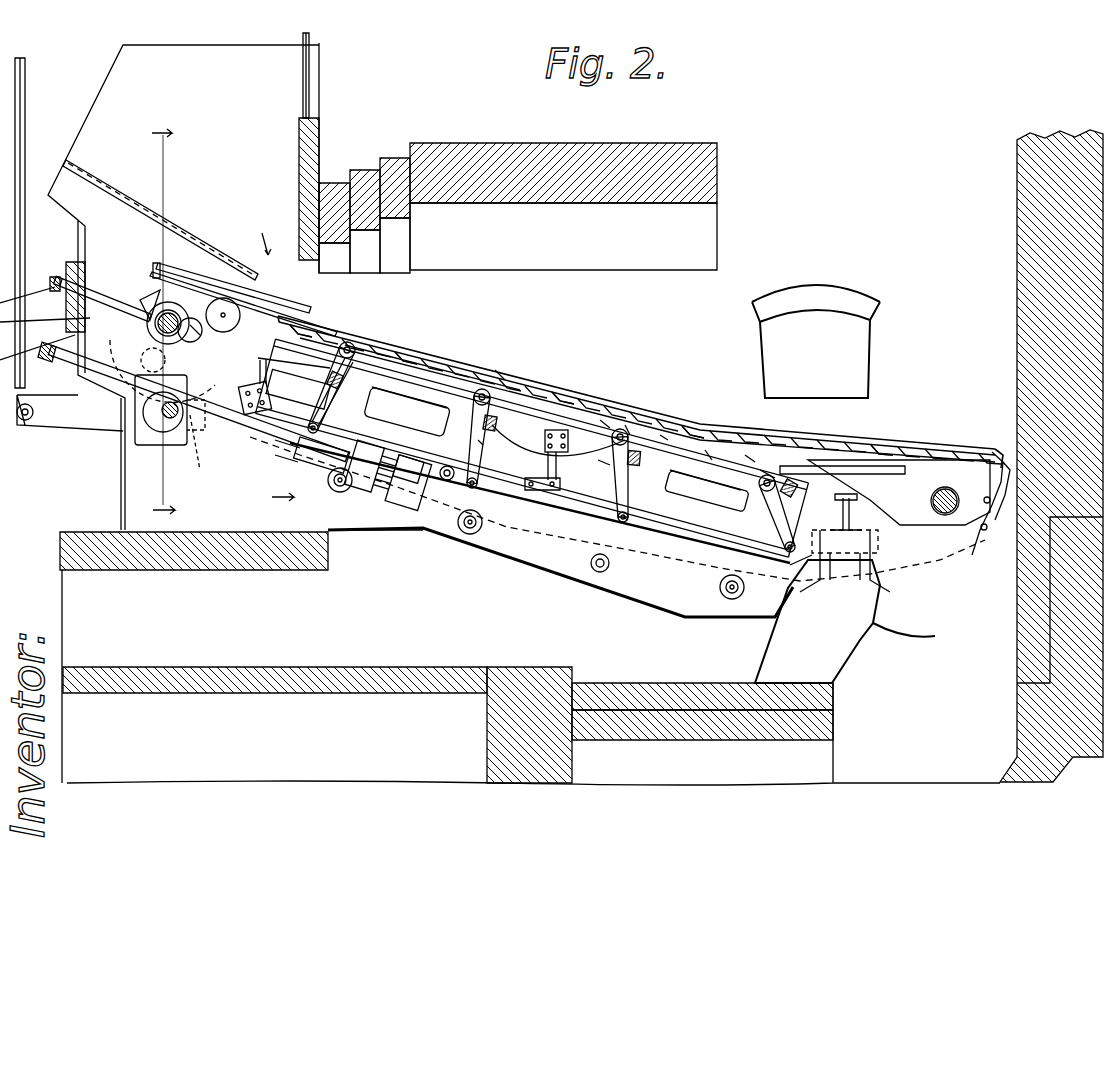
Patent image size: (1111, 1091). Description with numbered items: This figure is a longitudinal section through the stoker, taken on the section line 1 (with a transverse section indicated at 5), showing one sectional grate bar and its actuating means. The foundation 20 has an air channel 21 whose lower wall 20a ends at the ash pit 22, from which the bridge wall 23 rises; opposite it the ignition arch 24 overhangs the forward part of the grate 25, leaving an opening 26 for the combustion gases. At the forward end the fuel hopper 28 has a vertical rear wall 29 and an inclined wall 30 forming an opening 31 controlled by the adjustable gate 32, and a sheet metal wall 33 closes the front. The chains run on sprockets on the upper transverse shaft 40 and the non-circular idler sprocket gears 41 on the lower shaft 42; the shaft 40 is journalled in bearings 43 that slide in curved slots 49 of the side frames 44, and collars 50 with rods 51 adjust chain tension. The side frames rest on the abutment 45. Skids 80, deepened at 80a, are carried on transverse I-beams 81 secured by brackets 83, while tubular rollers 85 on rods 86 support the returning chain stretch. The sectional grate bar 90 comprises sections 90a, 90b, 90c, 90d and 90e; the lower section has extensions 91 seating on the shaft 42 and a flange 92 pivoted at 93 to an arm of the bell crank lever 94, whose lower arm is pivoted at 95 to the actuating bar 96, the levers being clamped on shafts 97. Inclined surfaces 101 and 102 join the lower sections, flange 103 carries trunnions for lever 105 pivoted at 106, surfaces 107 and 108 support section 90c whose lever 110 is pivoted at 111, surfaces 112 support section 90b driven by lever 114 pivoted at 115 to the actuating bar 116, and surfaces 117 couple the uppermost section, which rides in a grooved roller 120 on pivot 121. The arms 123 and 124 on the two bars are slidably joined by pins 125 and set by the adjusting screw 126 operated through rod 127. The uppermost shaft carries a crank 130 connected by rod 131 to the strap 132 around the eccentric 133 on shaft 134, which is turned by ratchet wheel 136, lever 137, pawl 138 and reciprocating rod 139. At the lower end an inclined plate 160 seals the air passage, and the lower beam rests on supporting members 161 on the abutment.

The section line 1- 1 is at (160, 321).
The section line 5- 5 is at (393, 268).
The foundation 20 is at (78, 532).
The lower wall of the channel 20a is at (672, 683).
The channel 21 is at (275, 648).
The ash pit 22 is at (533, 734).
The bridge wall 23 is at (1016, 320).
The ignition arch 24 is at (718, 170).
The grate 25 is at (567, 407).
The opening 26 is at (881, 211).
The fuel hopper 28 is at (267, 93).
The vertical rear wall 29 is at (328, 101).
The inclined wall 30 is at (113, 187).
The opening 31 is at (255, 230).
The gate 32 is at (298, 148).
The sheet metal wall 33 is at (79, 231).
The transverse shaft 40 is at (160, 288).
The idler sprocket gears 41 is at (978, 550).
The transverse shaft 42 is at (945, 515).
The bearings 43 is at (169, 318).
The side frames 44 is at (560, 572).
The abutment 45 is at (872, 660).
The curved slots 49 is at (197, 340).
The collars 50 is at (135, 342).
The rods 51 is at (95, 300).
The skids 80 is at (505, 472).
The increased-depth portion of skids 80a is at (718, 505).
The I-beams 81 is at (558, 470).
The brackets 83 is at (276, 442).
The tubular rollers 85 is at (468, 535).
The rods 86 is at (597, 573).
The sectional grate bars 90 is at (523, 367).
The uppermost section 90a is at (306, 331).
The section 90b is at (419, 344).
The section 90c is at (570, 387).
The section 90d is at (692, 417).
The lower section 90e is at (888, 441).
The downward extensions 91 is at (920, 505).
The flange 92 is at (770, 476).
The pivotal connection 93 is at (355, 348).
The bell crank lever 94 is at (795, 466).
The pivot 95 is at (791, 569).
The actuating bar 96 is at (680, 530).
The shaft 97 is at (835, 432).
The inclined surface 101 is at (762, 450).
The inclined surface 102 is at (745, 445).
The flange 103 is at (602, 454).
The bell crank lever 105 is at (663, 433).
The pivot 106 is at (625, 520).
The inclined surface 107 is at (626, 425).
The inclined surface 108 is at (607, 420).
The bell crank lever 110 is at (478, 440).
The pivot 111 is at (473, 487).
The inclined surfaces 112 is at (495, 385).
The lever 114 is at (330, 378).
The pivot 115 is at (360, 467).
The actuating bar 116 is at (384, 415).
The inclined surfaces 117 is at (380, 330).
The grooved roller 120 is at (258, 292).
The pivot 121 is at (224, 312).
The arm 123 is at (365, 470).
The arm 124 is at (410, 480).
The parallel pins 125 is at (410, 440).
The adjusting screw 126 is at (380, 485).
The rod 127 is at (332, 490).
The fixed crank 130 is at (298, 425).
The rod 131 is at (280, 460).
The circular strap 132 is at (190, 436).
The eccentric 133 is at (162, 448).
The shaft 134 is at (115, 432).
The ratchet wheel 136 is at (166, 364).
The lever 137 is at (98, 425).
The pawl 138 is at (192, 335).
The rod 139 is at (28, 104).
The inclined plate 160 is at (880, 620).
The supporting members 161 is at (923, 633).